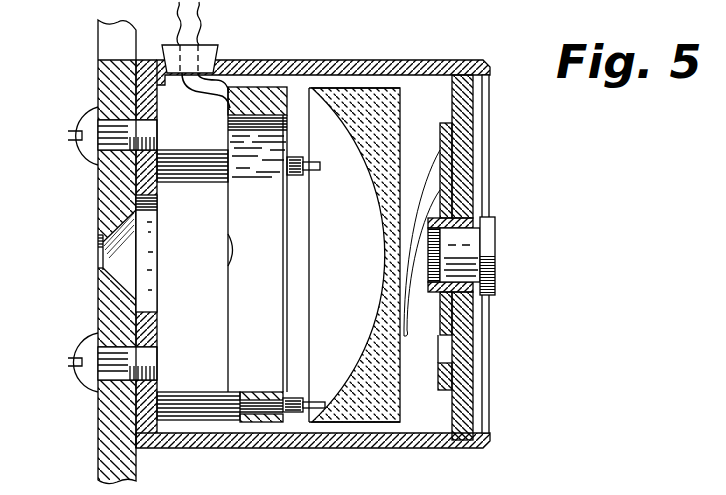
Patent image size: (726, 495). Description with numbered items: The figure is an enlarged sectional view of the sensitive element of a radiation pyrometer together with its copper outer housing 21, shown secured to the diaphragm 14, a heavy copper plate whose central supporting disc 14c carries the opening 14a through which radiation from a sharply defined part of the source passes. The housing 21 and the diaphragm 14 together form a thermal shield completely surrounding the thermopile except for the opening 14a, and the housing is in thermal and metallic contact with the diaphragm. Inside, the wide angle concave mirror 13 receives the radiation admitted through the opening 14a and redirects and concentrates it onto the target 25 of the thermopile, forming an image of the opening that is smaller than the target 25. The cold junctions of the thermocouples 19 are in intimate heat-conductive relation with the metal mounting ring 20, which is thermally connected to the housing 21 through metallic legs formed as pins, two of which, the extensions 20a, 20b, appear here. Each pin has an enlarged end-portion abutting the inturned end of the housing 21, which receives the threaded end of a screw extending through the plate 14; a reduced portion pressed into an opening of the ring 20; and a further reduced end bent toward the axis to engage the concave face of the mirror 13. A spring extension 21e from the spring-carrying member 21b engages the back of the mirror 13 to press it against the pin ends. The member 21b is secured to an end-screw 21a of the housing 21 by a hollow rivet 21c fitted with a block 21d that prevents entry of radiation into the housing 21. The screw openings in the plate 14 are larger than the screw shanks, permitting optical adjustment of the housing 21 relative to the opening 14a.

The concave mirror 13 is at (380, 217).
The diaphragm 14 is at (112, 40).
The opening 14a is at (100, 260).
The central supporting disc 14c is at (97, 310).
The thermocouples 19 is at (234, 205).
The mounting ring 20 is at (253, 96).
The extension 20a is at (170, 400).
The extension 20b is at (178, 152).
The outer housing 21 is at (413, 60).
The end-screw 21a is at (482, 90).
The spring-carrying member 21b is at (440, 125).
The hollow rivet 21c is at (483, 215).
The block 21d is at (476, 252).
The spring extension 21e is at (407, 334).
The target 25 is at (236, 248).